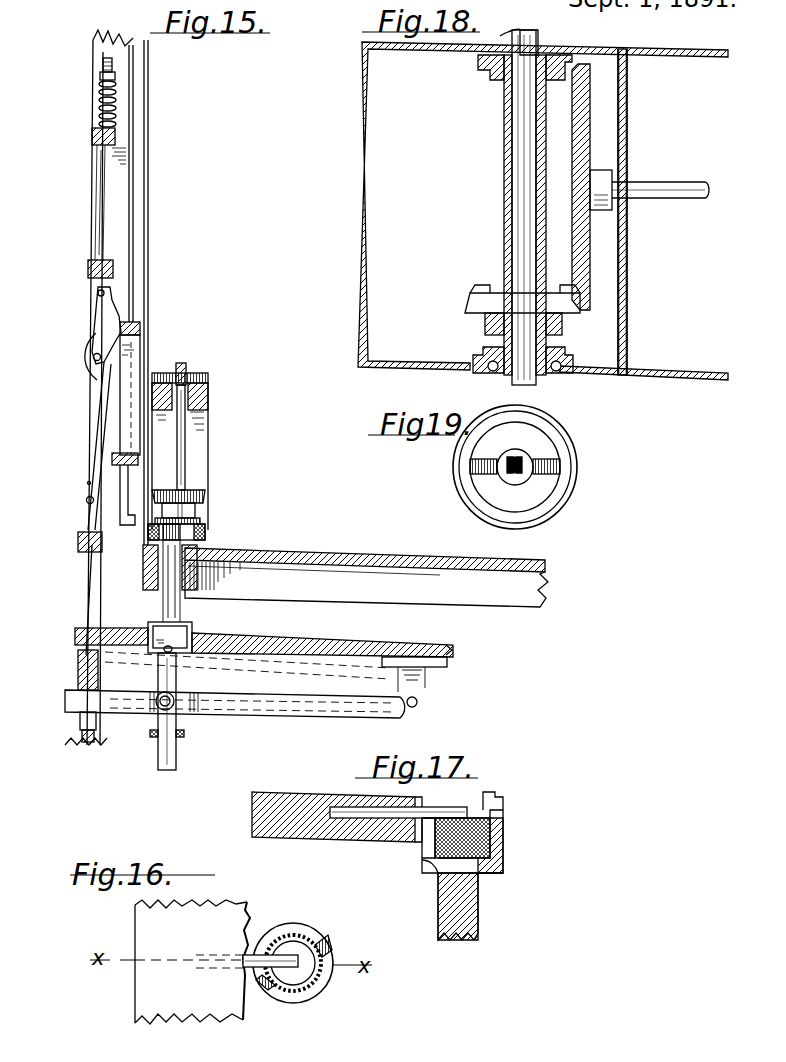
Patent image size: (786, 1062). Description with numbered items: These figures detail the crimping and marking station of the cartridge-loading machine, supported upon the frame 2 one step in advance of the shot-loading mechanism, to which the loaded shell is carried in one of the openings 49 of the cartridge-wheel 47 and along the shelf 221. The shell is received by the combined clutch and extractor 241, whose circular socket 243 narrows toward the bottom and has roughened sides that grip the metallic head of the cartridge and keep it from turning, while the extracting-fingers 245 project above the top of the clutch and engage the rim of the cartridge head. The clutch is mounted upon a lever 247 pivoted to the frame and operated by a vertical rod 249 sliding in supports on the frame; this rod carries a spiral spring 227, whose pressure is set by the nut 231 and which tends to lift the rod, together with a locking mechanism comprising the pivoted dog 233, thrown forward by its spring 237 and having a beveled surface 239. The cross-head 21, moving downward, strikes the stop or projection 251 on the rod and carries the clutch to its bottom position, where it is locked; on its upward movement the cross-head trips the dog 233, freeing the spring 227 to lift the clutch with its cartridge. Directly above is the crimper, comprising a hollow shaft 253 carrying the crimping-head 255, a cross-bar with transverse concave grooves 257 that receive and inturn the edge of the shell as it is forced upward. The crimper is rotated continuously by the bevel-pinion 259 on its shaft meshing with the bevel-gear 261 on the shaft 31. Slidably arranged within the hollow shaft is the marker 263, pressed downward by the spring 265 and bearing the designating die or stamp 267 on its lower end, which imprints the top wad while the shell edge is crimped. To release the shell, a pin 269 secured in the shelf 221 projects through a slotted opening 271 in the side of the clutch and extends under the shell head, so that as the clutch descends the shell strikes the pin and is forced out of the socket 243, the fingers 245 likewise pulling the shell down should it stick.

In FIG. 15, the vertical rail or standard 2 is at (93, 47).
In FIG. 15, the cross-head 21 is at (140, 350).
In FIG. 18, the shaft 31 is at (655, 190).
In FIG. 15, the cartridge-wheel 47 is at (302, 551).
In FIG. 15, the openings 49 is at (145, 566).
In FIG. 15, the shelf 221 is at (135, 623).
In FIG. 17, the shelf 221 is at (300, 787).
In FIG. 16, the shelf 221 is at (215, 912).
In FIG. 15, the spiral spring 227 is at (100, 105).
In FIG. 15, the nut 231 is at (103, 76).
In FIG. 15, the pivoted dog 233 is at (104, 310).
In FIG. 15, the spring 237 is at (93, 342).
In FIG. 15, the beveled surface 239 is at (122, 326).
In FIG. 15, the combined clutch and extractor 241 is at (192, 666).
In FIG. 17, the combined clutch and extractor 241 is at (505, 858).
In FIG. 16, the circular socket 243 is at (296, 985).
In FIG. 17, the extracting-fingers 245 is at (505, 798).
In FIG. 16, the extracting-fingers 245 is at (325, 945).
In FIG. 15, the lever 247 is at (276, 713).
In FIG. 15, the vertical rod 249 is at (90, 592).
In FIG. 15, the stop or projection 251 is at (108, 470).
In FIG. 15, the hollow shaft 253 is at (195, 457).
In FIG. 18, the hollow shaft 253 is at (505, 168).
In FIG. 15, the crimping-head 255 is at (206, 529).
In FIG. 18, the crimping-head 255 is at (556, 373).
In FIG. 19, the crimping-head 255 is at (568, 452).
In FIG. 18, the transverse concave grooves 257 is at (492, 371).
In FIG. 19, the transverse concave grooves 257 is at (474, 467).
In FIG. 15, the bevel-pinion 259 is at (203, 497).
In FIG. 18, the bevel-pinion 259 is at (565, 322).
In FIG. 18, the bevel-gear 261 is at (582, 160).
In FIG. 15, the marker 263 is at (210, 380).
In FIG. 18, the marker 263 is at (524, 232).
In FIG. 15, the spring 265 is at (187, 371).
In FIG. 18, the spring 265 is at (514, 35).
In FIG. 19, the designating die or stamp 267 is at (502, 478).
In FIG. 17, the pin 269 is at (440, 810).
In FIG. 16, the pin 269 is at (255, 945).
In FIG. 17, the slotted opening 271 is at (426, 860).